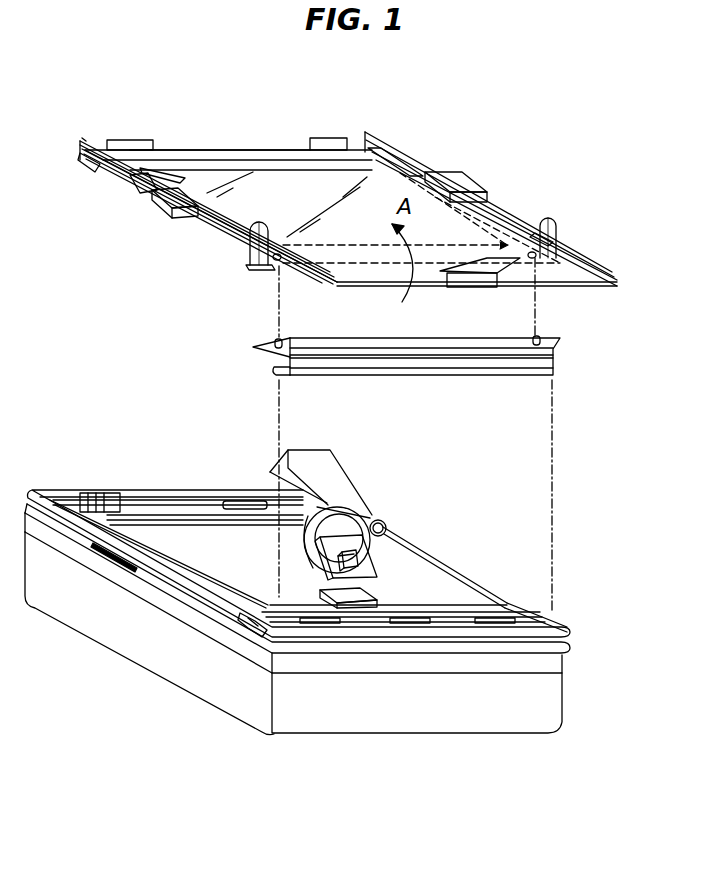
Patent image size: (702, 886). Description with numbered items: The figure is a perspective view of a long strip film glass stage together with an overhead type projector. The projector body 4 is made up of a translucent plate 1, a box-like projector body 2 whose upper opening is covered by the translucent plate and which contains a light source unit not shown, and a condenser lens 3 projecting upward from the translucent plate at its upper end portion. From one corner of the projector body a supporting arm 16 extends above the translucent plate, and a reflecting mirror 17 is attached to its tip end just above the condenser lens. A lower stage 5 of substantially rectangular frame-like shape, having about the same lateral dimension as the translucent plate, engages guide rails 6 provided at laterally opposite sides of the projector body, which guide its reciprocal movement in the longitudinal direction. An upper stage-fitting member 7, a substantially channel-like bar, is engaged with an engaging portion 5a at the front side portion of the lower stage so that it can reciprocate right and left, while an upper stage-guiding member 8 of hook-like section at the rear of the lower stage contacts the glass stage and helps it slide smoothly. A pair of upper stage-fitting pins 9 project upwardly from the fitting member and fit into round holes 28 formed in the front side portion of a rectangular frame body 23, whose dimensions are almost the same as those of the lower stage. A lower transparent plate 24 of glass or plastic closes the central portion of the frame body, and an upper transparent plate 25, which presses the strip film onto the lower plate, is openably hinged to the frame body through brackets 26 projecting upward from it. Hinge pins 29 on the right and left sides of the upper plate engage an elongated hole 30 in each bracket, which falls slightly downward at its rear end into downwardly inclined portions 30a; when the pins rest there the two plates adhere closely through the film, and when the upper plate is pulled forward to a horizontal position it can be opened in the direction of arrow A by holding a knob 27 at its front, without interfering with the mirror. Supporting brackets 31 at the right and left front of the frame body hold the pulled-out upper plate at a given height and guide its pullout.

The translucent plate 1 is at (213, 565).
The box-like projector body 2 is at (507, 723).
The condenser lens 3 is at (379, 601).
The projector body 4 is at (497, 577).
The lower stage 5 is at (106, 517).
The engaging portion 5a is at (348, 634).
The guide rails 6 is at (238, 618).
The upper stage-fitting member 7 is at (468, 363).
The upper stage-guiding member 8 is at (244, 503).
The upper stage-fitting pins 9 is at (282, 344).
The supporting arm 16 is at (330, 465).
The reflecting mirror 17 is at (367, 562).
The rectangular frame body 23 is at (197, 157).
The lower transparent plate 24 is at (257, 170).
The upper transparent plate 25 is at (590, 266).
The brackets 26 is at (82, 140).
The knob 27 is at (480, 274).
The round holes 28 is at (244, 295).
The hinge pins 29 is at (137, 178).
The elongated hole 30 is at (157, 197).
The downwardly inclined portions 30a is at (90, 168).
The supporting brackets 31 is at (250, 243).